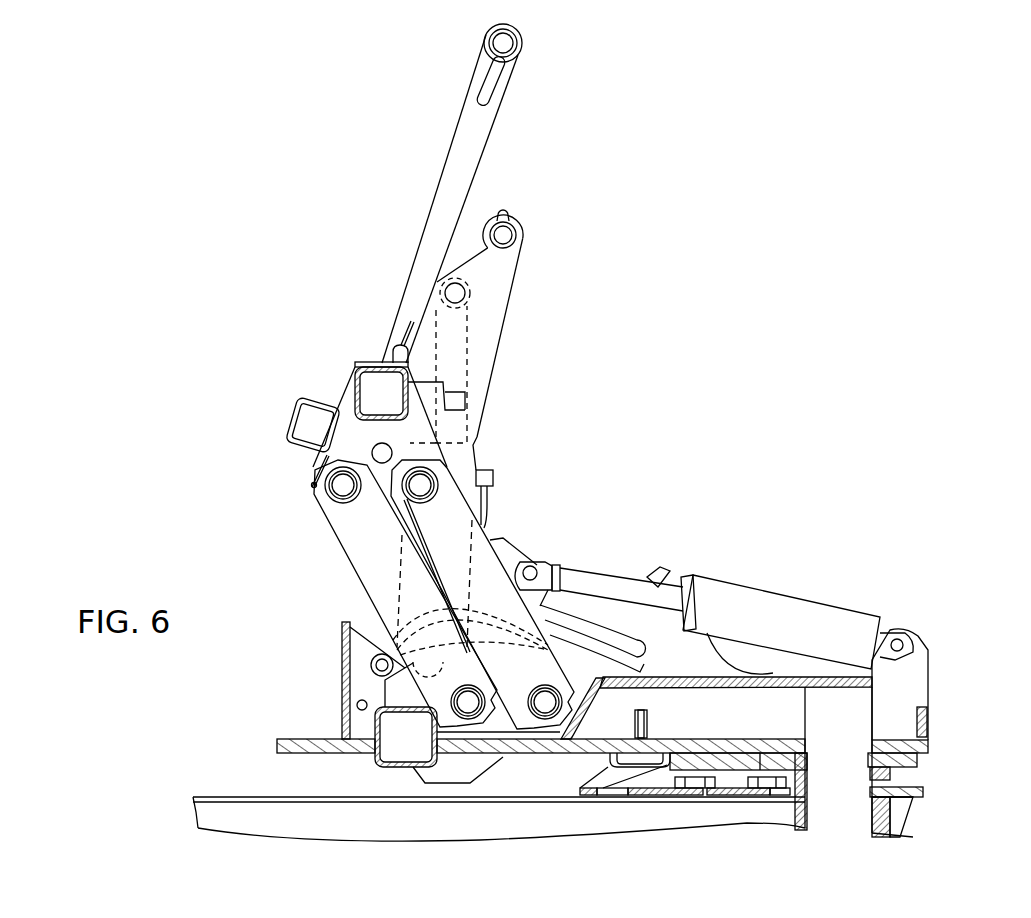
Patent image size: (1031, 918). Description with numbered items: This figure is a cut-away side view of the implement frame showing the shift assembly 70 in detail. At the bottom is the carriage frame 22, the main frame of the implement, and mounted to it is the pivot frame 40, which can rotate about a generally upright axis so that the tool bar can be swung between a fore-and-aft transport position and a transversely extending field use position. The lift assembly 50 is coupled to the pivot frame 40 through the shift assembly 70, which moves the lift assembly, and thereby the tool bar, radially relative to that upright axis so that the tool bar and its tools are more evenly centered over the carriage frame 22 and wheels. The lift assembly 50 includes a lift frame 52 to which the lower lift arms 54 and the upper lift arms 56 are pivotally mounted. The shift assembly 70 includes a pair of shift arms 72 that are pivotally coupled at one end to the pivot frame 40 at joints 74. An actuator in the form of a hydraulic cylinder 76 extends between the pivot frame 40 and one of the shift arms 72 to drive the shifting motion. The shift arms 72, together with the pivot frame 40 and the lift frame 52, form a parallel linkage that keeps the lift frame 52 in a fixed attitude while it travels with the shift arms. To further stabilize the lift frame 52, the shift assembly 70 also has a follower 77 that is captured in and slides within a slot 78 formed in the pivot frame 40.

The carriage frame 22 is at (258, 813).
The pivot frame 40 is at (896, 703).
The lift assembly 50 is at (512, 350).
The lift frame 52 is at (347, 438).
The lower lift arms 54 is at (516, 298).
The upper lift arms 56 is at (470, 151).
The shift assembly 70 is at (532, 530).
The shift arms 72 is at (385, 550).
The joints 74 is at (472, 712).
The hydraulic cylinder 76 is at (762, 607).
The follower 77 is at (352, 648).
The slot 78 is at (577, 633).